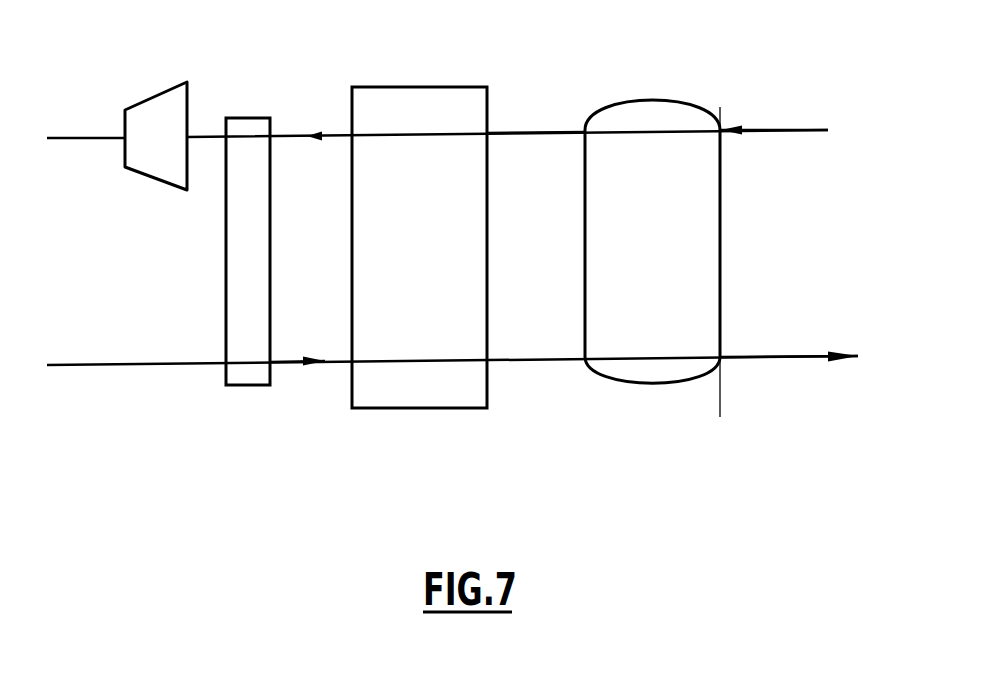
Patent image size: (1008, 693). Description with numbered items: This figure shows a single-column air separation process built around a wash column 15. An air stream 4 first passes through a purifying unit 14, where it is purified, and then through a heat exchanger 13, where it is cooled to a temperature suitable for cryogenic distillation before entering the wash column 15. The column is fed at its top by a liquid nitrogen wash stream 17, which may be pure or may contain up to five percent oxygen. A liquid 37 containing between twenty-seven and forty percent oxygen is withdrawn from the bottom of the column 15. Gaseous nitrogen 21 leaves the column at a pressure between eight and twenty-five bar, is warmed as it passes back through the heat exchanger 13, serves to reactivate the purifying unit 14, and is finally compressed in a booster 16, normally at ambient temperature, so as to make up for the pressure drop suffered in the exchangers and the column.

The air stream 4 is at (337, 364).
The heat exchanger 13 is at (448, 410).
The purifying unit 14 is at (252, 277).
The wash column 15 is at (695, 260).
The booster 16 is at (173, 105).
The liquid nitrogen wash stream 17 is at (790, 130).
The gaseous nitrogen 21 is at (533, 130).
The liquid 37 is at (777, 358).